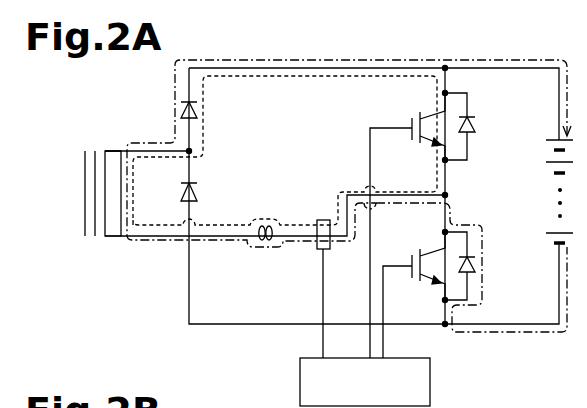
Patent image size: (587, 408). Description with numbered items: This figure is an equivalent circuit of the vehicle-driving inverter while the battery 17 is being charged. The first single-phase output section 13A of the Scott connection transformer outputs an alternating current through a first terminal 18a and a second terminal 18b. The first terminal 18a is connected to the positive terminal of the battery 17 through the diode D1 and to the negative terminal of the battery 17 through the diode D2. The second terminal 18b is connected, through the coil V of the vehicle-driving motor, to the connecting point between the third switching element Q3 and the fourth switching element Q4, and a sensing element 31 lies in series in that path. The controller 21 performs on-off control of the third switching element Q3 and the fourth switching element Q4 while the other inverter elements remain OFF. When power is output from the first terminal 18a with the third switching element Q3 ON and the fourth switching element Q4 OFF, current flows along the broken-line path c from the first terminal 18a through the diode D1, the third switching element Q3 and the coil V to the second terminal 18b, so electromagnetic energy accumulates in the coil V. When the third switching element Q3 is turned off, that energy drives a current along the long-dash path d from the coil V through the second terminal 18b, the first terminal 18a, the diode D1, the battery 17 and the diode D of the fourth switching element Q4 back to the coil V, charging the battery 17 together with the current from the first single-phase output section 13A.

The first single-phase output section 13A is at (93, 247).
The first terminal 18a is at (126, 150).
The second terminal 18b is at (122, 238).
The diode D1 is at (200, 110).
The diode D2 is at (200, 190).
The coil V is at (264, 222).
The current detection resistor 31 is at (322, 218).
The third switching element Q3 is at (407, 116).
The fourth switching element Q4 is at (409, 256).
The diode D is at (477, 122).
The battery 17 is at (553, 243).
The controller 21 is at (432, 381).
The part c is at (137, 197).
The part d is at (512, 66).